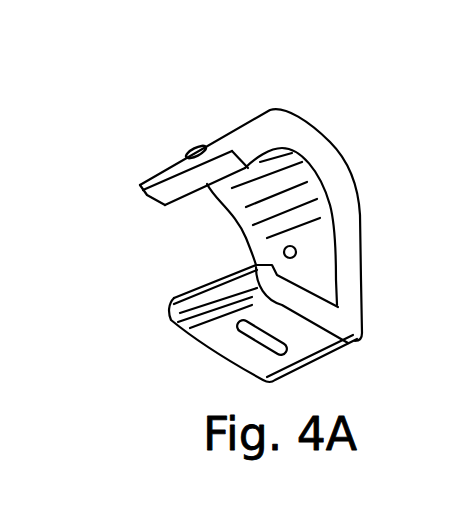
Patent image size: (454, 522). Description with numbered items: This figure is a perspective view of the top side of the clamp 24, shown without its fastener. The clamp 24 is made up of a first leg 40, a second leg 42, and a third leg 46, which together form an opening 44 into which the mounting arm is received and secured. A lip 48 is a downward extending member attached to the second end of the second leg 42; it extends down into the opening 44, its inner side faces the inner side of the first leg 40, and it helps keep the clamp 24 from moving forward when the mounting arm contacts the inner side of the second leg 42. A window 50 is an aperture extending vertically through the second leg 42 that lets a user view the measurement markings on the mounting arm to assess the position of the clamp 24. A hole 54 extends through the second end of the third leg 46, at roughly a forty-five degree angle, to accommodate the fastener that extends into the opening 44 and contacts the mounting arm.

The clamp 24 is at (366, 156).
The first leg 40 is at (347, 235).
The second leg 42 is at (306, 309).
The opening 44 is at (172, 236).
The third leg 46 is at (302, 138).
The lip 48 is at (247, 249).
The window 50 is at (250, 340).
The hole 54 is at (195, 149).